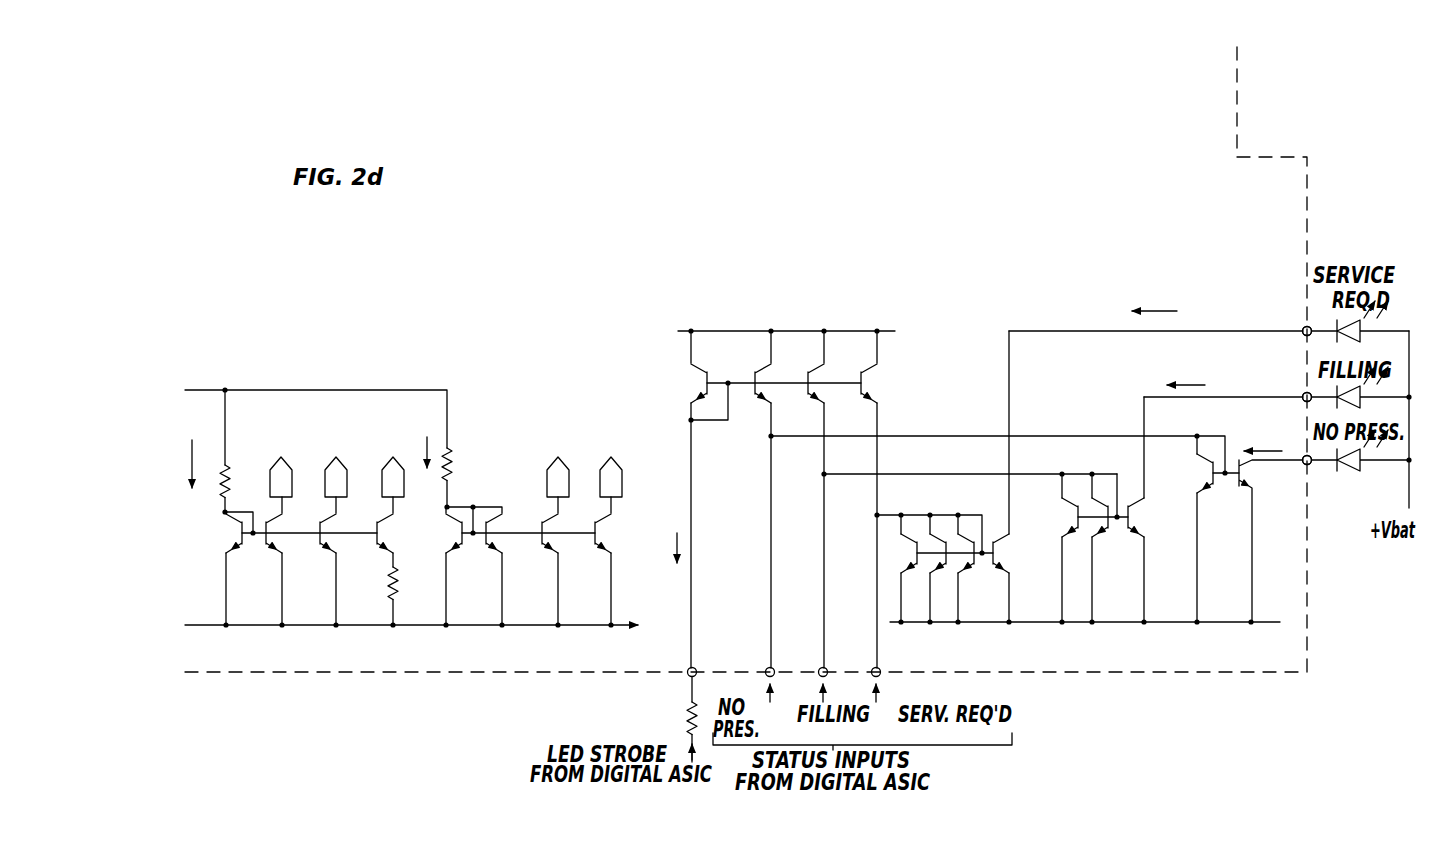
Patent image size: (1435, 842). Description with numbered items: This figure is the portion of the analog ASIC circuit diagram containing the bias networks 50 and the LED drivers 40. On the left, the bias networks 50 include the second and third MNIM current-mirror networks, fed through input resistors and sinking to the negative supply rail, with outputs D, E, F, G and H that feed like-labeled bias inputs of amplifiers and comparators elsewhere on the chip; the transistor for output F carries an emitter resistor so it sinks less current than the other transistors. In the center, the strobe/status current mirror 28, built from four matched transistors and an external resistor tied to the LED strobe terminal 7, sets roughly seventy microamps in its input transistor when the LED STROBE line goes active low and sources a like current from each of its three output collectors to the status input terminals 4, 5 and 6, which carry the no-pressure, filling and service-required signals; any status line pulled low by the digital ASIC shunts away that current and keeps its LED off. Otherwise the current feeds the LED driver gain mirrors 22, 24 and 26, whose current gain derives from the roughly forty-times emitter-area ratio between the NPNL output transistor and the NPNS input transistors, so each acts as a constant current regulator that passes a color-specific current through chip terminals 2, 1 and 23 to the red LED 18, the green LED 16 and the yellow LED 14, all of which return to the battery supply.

The green LED terminal 1 is at (1311, 388).
The red LED terminal 2 is at (1314, 321).
The no pressure status input terminal 4 is at (757, 705).
The filling status input terminal 5 is at (832, 687).
The service required status input terminal 6 is at (895, 710).
The LED strobe input terminal 7 is at (675, 715).
The LED indicator 14 is at (1351, 469).
The LED indicator 16 is at (1347, 404).
The LED indicator 18 is at (1356, 330).
The constant current driver 22 is at (1290, 597).
The yellow LED terminal 23 is at (1319, 451).
The constant current driver 24 is at (1069, 423).
The constant current driver 26 is at (942, 464).
The LED strobe circuit 28 is at (676, 316).
The LED drivers 40 is at (1093, 488).
The bias networks 50 is at (420, 522).